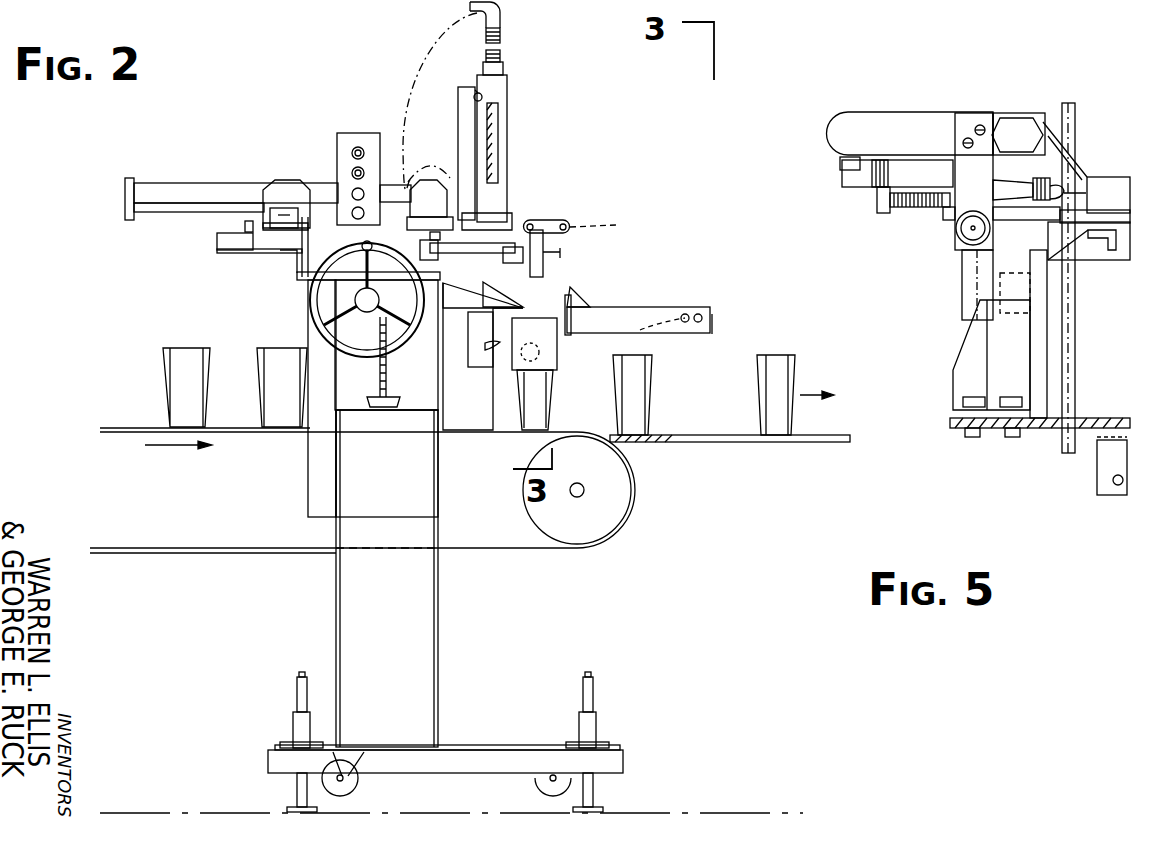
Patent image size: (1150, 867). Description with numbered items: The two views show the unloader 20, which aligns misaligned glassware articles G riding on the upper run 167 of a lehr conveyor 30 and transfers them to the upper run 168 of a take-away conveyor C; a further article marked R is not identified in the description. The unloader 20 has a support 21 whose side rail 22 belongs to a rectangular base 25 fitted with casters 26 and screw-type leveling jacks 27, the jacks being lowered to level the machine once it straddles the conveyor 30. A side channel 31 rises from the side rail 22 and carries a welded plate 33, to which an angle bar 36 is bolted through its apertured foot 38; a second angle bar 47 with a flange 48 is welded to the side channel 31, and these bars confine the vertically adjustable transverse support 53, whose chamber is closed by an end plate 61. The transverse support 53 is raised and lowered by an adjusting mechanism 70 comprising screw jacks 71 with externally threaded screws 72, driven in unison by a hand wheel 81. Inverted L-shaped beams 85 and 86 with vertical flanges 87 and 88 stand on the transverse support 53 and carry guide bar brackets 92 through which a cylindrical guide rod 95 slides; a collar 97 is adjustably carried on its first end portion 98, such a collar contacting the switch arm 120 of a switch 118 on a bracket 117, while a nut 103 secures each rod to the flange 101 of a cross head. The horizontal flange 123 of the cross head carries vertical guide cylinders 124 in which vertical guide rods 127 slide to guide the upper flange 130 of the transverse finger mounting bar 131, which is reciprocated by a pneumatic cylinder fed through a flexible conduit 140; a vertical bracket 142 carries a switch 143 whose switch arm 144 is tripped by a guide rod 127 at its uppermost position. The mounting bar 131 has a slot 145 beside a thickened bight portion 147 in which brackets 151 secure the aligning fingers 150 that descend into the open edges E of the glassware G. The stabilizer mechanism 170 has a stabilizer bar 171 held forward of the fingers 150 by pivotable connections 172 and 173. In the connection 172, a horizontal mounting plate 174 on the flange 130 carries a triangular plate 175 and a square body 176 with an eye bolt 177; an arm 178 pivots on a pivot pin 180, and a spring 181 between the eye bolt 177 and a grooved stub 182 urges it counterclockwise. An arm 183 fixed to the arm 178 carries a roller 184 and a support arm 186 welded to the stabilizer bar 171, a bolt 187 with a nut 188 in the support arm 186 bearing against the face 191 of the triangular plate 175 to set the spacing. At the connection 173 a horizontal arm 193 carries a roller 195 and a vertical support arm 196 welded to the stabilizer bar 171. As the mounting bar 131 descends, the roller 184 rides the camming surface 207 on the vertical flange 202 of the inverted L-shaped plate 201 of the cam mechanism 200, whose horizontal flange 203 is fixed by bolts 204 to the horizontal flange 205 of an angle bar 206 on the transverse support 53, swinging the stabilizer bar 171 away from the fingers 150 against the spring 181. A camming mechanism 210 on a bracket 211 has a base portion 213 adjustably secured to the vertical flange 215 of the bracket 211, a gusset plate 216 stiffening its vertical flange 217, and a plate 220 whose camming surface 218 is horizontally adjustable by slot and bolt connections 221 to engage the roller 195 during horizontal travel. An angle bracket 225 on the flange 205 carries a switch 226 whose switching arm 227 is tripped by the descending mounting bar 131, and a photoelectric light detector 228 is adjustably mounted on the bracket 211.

In FIG. 2, the unloader 20 is at (572, 186).
In FIG. 2, the support 21 is at (446, 637).
In FIG. 2, the side rail 22 is at (426, 768).
In FIG. 2, the base 25 is at (486, 755).
In FIG. 2, the casters 26 is at (358, 786).
In FIG. 2, the screw-type leveling jacks 27 is at (296, 726).
In FIG. 2, the lehr conveyor 30 is at (183, 548).
In FIG. 2, the side channel 31 is at (362, 609).
In FIG. 2, the plate 33 is at (356, 432).
In FIG. 2, the angle bar 36 is at (440, 442).
In FIG. 2, the apertured foot 38 is at (430, 447).
In FIG. 2, the second angle bar 47 is at (320, 475).
In FIG. 2, the flange 48 is at (312, 450).
In FIG. 2, the transverse support 53 is at (326, 292).
In FIG. 2, the plate 61 is at (367, 299).
In FIG. 2, the adjusting mechanism 70 is at (372, 403).
In FIG. 2, the screw jacks 71 is at (400, 404).
In FIG. 2, the externally threaded screw 72 is at (380, 350).
In FIG. 2, the hand wheel 81 is at (331, 312).
In FIG. 2, the inverted L-shaped beam 85 is at (305, 209).
In FIG. 2, the inverted L-shaped beam 86 is at (395, 195).
In FIG. 2, the vertical flange 87 is at (287, 262).
In FIG. 2, the vertical flange 88 is at (430, 250).
In FIG. 2, the guide bar bracket 92 is at (288, 181).
In FIG. 2, the cylindrical guide rod 95 is at (143, 208).
In FIG. 2, the collar 97 is at (126, 184).
In FIG. 2, the first end portion 98 is at (232, 186).
In FIG. 2, the flange 101 is at (470, 186).
In FIG. 2, the nut 103 is at (496, 195).
In FIG. 2, the bracket 117 is at (252, 253).
In FIG. 2, the switch 118 is at (218, 241).
In FIG. 2, the switch arm 120 is at (244, 228).
In FIG. 2, the horizontal flange 123 is at (506, 216).
In FIG. 2, the vertical guide cylinder 124 is at (502, 188).
In FIG. 2, the vertical guide rod 127 is at (508, 114).
In FIG. 5, the upper flange 130 is at (1060, 241).
In FIG. 2, the transverse finger mounting bar 131 is at (470, 285).
In FIG. 5, the transverse finger mounting bar 131 is at (1107, 380).
In FIG. 2, the flexible conduit 140 is at (470, 8).
In FIG. 2, the vertical bracket 142 is at (462, 131).
In FIG. 2, the switch 143 is at (476, 96).
In FIG. 2, the movable switch arm 144 is at (458, 86).
In FIG. 5, the slot 145 is at (1090, 270).
In FIG. 5, the thickened bight portion 147 is at (1086, 252).
In FIG. 5, the aligning fingers 150 is at (1075, 359).
In FIG. 5, the bracket 151 is at (1075, 282).
In FIG. 2, the upper run 167 is at (450, 457).
In FIG. 2, the upper run 168 is at (696, 432).
In FIG. 2, the stabilizer mechanism 170 is at (580, 266).
In FIG. 5, the stabilizer mechanism 170 is at (892, 84).
In FIG. 5, the stabilizer bar 171 is at (1038, 328).
In FIG. 5, the pivotable connection 172 is at (1075, 110).
In FIG. 2, the pivotable connection 173 is at (542, 224).
In FIG. 5, the horizontal mounting plate 174 is at (1030, 207).
In FIG. 5, the triangularly shaped plate 175 is at (1062, 142).
In FIG. 5, the square body 176 is at (1100, 178).
In FIG. 5, the eye bolt 177 is at (1087, 152).
In FIG. 5, the arm 178 is at (896, 126).
In FIG. 5, the pivot pin 180 is at (1015, 118).
In FIG. 5, the spring 181 is at (880, 201).
In FIG. 5, the grooved stub 182 is at (850, 172).
In FIG. 5, the arm 183 is at (967, 113).
In FIG. 5, the roller 184 is at (958, 236).
In FIG. 5, the support arm 186 is at (965, 292).
In FIG. 5, the bolt 187 is at (906, 214).
In FIG. 5, the nut 188 is at (946, 216).
In FIG. 5, the face 191 is at (960, 180).
In FIG. 2, the horizontal arm 193 is at (566, 226).
In FIG. 2, the roller 195 is at (614, 228).
In FIG. 2, the vertical support arm 196 is at (545, 251).
In FIG. 2, the cam mechanism 200 is at (600, 298).
In FIG. 5, the cam mechanism 200 is at (948, 382).
In FIG. 5, the inverted L-shaped plate 201 is at (1060, 441).
In FIG. 5, the vertical flange 202 is at (992, 357).
In FIG. 5, the horizontal flange 203 is at (953, 409).
In FIG. 5, the bolts 204 is at (960, 432).
In FIG. 5, the horizontal flange 205 is at (1010, 438).
In FIG. 5, the angle bar 206 is at (1118, 430).
In FIG. 2, the camming surface 207 is at (560, 280).
In FIG. 5, the camming surface 207 is at (965, 326).
In FIG. 2, the camming mechanism 210 is at (672, 308).
In FIG. 2, the bracket 211 is at (486, 302).
In FIG. 2, the base portion 213 is at (570, 322).
In FIG. 2, the vertical flange 215 is at (553, 398).
In FIG. 2, the strengthening gusset plate 216 is at (534, 342).
In FIG. 2, the vertical flange 217 is at (622, 336).
In FIG. 2, the camming surface 218 is at (696, 306).
In FIG. 2, the plate 220 is at (705, 310).
In FIG. 2, the slot and bolt connections 221 is at (692, 330).
In FIG. 2, the angle bracket 225 is at (480, 337).
In FIG. 5, the angle bracket 225 is at (1100, 462).
In FIG. 2, the switch 226 is at (485, 362).
In FIG. 5, the switch 226 is at (1100, 490).
In FIG. 2, the switching arm 227 is at (480, 362).
In FIG. 5, the switching arm 227 is at (1114, 500).
In FIG. 2, the photoelectric light detector 228 is at (525, 370).
In FIG. 2, the take-away conveyor C is at (696, 445).
In FIG. 2, the edge E is at (168, 349).
In FIG. 2, the glassware articles G is at (162, 386).
In FIG. 2, the filled container R is at (640, 394).